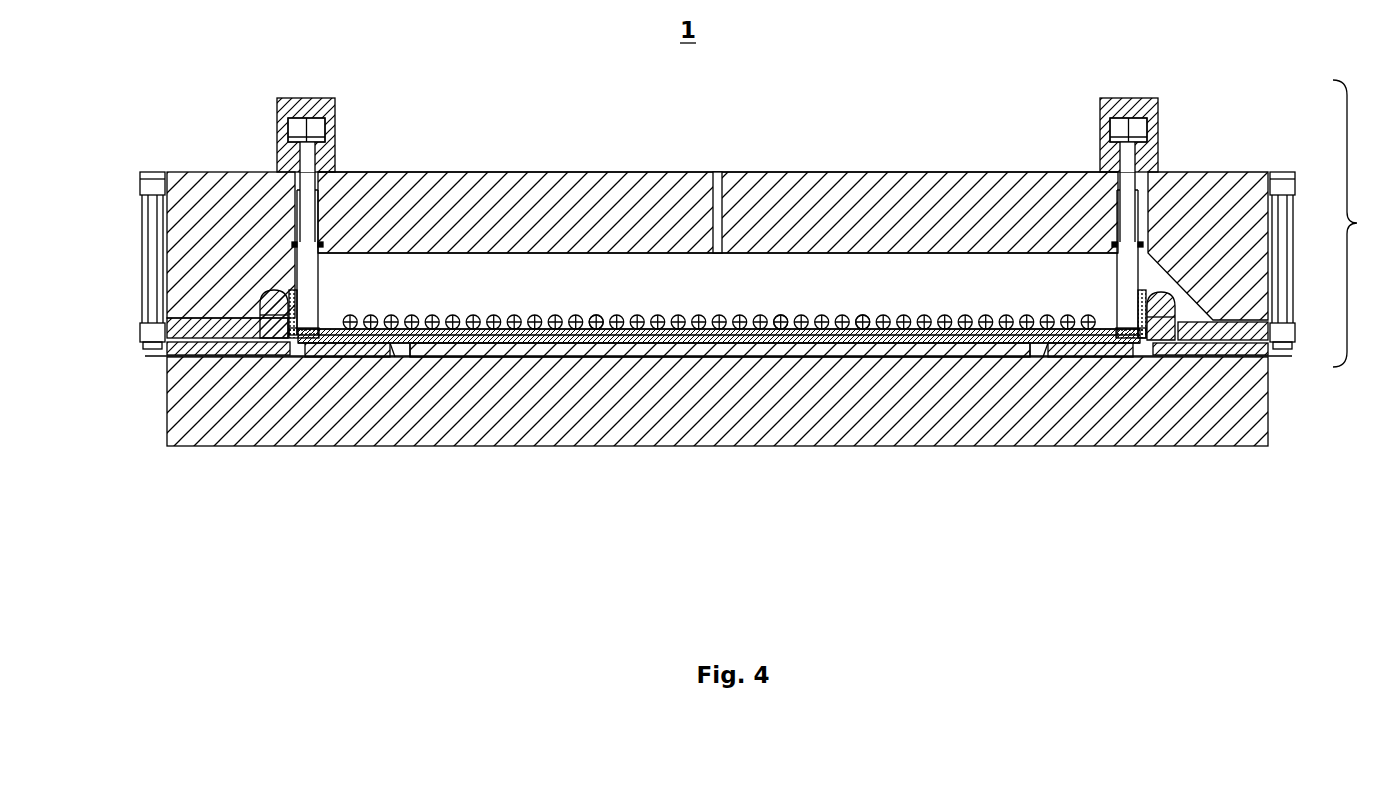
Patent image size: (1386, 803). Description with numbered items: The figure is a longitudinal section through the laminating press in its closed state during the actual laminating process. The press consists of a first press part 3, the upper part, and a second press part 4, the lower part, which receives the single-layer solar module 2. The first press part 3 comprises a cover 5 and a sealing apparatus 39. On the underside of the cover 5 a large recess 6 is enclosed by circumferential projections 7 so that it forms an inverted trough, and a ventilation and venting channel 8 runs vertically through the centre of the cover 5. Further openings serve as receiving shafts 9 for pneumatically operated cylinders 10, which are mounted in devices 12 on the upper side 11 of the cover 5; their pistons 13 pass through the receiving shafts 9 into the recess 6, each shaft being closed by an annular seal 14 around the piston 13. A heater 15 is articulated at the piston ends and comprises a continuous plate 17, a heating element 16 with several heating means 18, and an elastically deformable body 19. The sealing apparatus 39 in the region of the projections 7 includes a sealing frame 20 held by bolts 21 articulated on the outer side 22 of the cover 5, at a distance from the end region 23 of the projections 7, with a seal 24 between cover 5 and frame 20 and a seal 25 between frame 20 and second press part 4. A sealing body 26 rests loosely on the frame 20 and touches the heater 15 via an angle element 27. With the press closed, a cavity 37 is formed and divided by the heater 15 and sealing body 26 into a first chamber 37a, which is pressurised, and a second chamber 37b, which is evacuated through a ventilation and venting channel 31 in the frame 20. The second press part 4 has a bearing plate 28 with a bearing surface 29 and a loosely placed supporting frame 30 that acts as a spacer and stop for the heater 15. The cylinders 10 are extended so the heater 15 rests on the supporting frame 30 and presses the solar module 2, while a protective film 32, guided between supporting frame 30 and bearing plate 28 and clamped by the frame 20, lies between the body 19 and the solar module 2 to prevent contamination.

The solar module 2 is at (598, 358).
The first press part 3 is at (1356, 223).
The second press part 4 is at (851, 446).
The cover 5 is at (535, 200).
The recess 6 is at (778, 262).
The projections 7 is at (187, 265).
The ventilation and venting channel 8 is at (722, 186).
The receiving shaft 9 is at (292, 203).
The cylinder 10 is at (311, 141).
The upper side 11 is at (617, 172).
The device 12 is at (313, 99).
The piston 13 is at (304, 212).
The seal 14 is at (321, 246).
The heater 15 is at (699, 307).
The heating element 16 is at (507, 317).
The plate 17 is at (594, 318).
The heating means 18 is at (782, 318).
The elastically deformable body 19 is at (868, 318).
The sealing frame 20 is at (220, 353).
The bolts 21 is at (140, 198).
The outer side 22 is at (160, 225).
The end region 23 is at (190, 298).
The seal 24 is at (230, 323).
The seal 25 is at (193, 356).
The sealing body 26 is at (278, 318).
The angle element 27 is at (295, 300).
The bearing plate 28 is at (505, 415).
The bearing surface 29 is at (403, 358).
The supporting frame 30 is at (340, 352).
The ventilation and venting channel 31 is at (270, 353).
The protective film 32 is at (1030, 356).
The cavity 37 is at (653, 283).
The first chamber 37a is at (443, 297).
The second chamber 37b is at (301, 342).
The sealing apparatus 39 is at (223, 310).